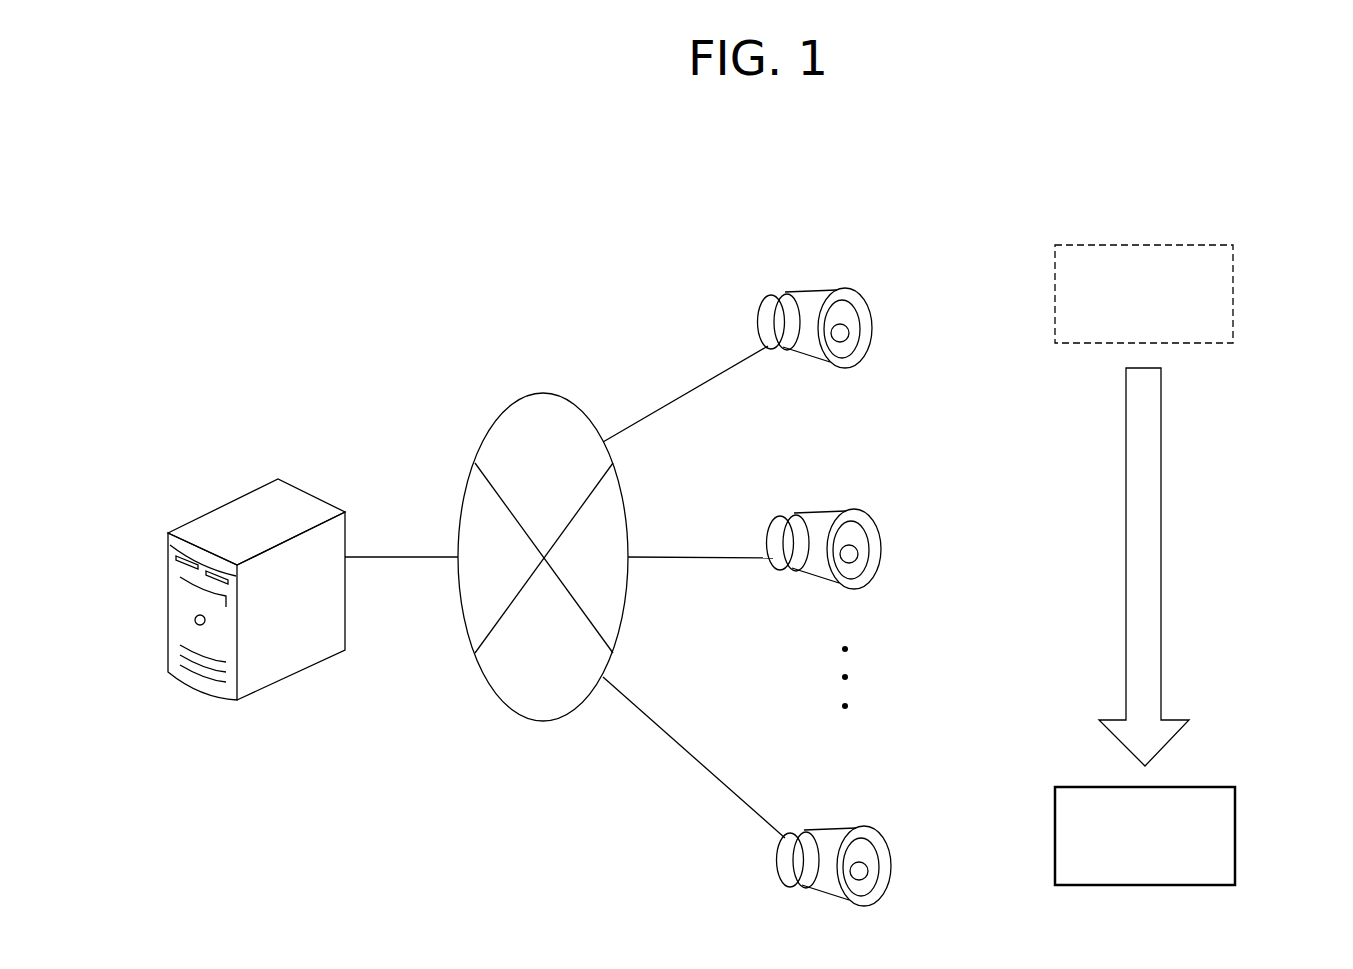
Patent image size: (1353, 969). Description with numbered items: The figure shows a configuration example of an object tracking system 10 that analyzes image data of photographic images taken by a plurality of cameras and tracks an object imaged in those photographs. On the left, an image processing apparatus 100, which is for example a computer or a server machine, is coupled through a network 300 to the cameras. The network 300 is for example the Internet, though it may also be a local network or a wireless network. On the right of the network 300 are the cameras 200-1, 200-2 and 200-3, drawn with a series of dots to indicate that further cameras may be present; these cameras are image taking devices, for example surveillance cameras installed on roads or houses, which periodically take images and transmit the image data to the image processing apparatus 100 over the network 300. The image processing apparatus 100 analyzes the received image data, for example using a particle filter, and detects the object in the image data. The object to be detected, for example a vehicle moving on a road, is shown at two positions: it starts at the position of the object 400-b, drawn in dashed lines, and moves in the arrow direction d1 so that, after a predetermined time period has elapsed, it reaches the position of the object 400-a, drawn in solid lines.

The object tracking system 10 is at (733, 171).
The image processing apparatus 100 is at (238, 495).
The camera 200-1 is at (828, 291).
The camera 200-2 is at (832, 511).
The camera 200-3 is at (841, 826).
The network 300 is at (573, 400).
The object 400-a is at (1203, 786).
The object 400-b is at (1173, 244).
The arrow direction d1 is at (1165, 481).